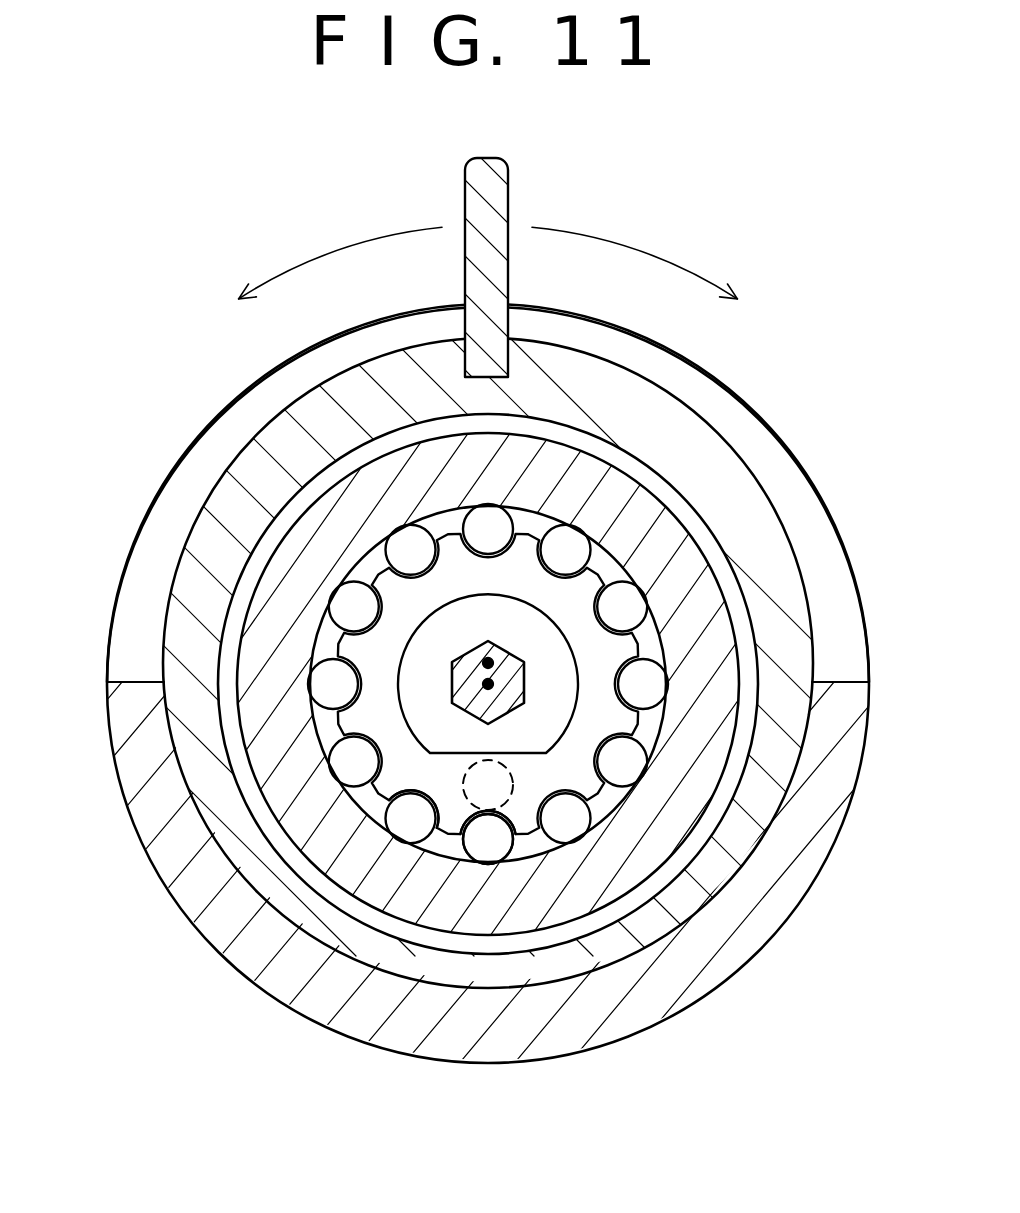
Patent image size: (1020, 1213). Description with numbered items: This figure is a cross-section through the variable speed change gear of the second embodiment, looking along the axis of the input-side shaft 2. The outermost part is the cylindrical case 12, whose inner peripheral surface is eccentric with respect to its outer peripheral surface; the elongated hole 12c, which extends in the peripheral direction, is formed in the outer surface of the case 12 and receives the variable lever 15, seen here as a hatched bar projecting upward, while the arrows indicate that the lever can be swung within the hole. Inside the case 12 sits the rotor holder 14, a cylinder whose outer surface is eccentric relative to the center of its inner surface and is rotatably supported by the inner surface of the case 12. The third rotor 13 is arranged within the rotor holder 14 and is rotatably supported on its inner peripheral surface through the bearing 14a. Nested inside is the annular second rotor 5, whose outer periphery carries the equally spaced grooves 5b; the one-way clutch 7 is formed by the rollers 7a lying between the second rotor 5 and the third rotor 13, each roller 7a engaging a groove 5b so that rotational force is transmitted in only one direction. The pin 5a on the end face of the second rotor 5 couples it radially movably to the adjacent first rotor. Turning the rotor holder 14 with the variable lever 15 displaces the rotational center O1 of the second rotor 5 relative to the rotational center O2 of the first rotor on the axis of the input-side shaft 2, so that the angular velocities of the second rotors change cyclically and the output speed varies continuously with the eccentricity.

The input-side shaft 2 is at (330, 766).
The second rotor 5 is at (360, 652).
The pin 5a is at (506, 797).
The groove 5b is at (518, 845).
The one-way clutch 7 is at (612, 815).
The roller 7a is at (400, 840).
The case 12 is at (338, 1035).
The elongated hole 12c is at (223, 433).
The third rotor 13 is at (313, 835).
The rotor holder 14 is at (678, 442).
The bearing 14a is at (797, 782).
The variable lever 15 is at (508, 193).
The rotational center of the second rotor O1 is at (488, 663).
The rotational center of the first rotor O2 is at (488, 684).